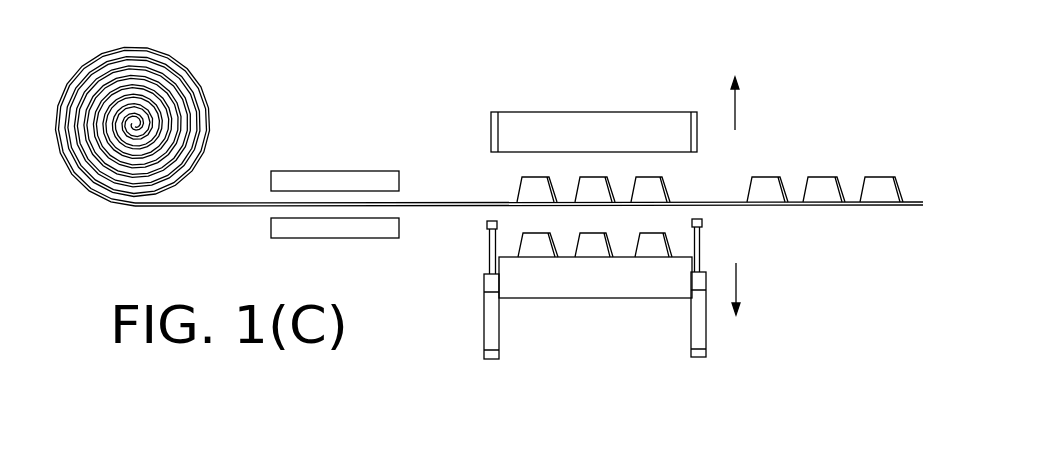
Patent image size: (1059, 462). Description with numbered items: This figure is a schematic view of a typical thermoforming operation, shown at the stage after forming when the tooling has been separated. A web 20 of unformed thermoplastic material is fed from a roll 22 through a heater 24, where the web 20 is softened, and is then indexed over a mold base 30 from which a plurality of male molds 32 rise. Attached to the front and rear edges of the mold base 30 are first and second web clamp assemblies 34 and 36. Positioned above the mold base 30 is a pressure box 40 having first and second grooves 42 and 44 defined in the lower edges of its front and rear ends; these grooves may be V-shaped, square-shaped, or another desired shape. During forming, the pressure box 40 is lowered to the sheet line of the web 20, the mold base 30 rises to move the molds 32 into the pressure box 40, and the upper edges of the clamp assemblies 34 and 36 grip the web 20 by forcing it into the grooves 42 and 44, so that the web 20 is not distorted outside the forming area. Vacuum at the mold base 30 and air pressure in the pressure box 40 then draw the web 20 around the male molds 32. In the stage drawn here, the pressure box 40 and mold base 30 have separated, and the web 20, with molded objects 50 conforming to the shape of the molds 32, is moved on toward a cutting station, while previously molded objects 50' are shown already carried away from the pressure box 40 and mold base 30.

The roll 22 is at (170, 58).
The web 20 is at (250, 207).
The heater 24 is at (372, 178).
The pressure box 40 is at (533, 122).
The first groove 42 is at (496, 162).
The second groove 44 is at (695, 159).
The molded objects 50 is at (593, 125).
The previously molded objects 50' is at (825, 160).
The male molds 32 is at (653, 243).
The mold base 30 is at (617, 287).
The first web clamp assembly 34 is at (490, 316).
The second web clamp assembly 36 is at (700, 320).